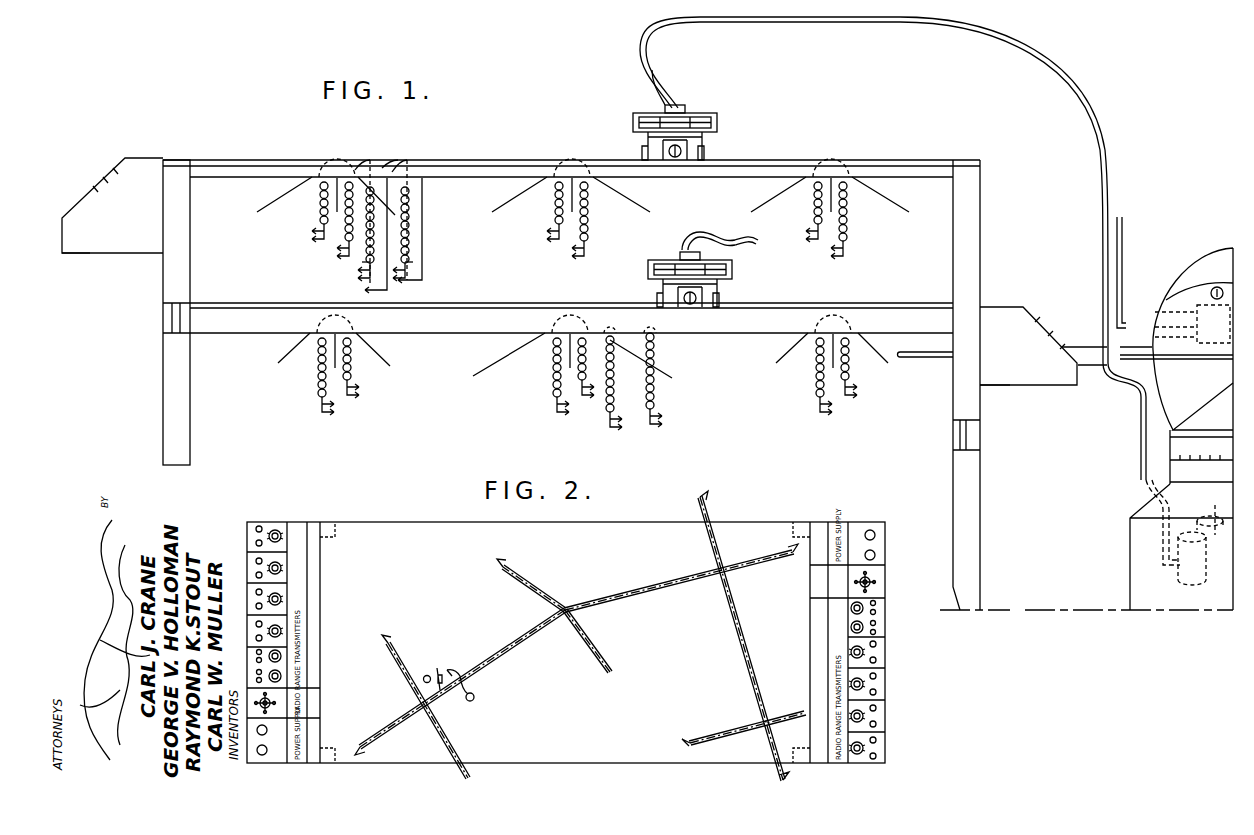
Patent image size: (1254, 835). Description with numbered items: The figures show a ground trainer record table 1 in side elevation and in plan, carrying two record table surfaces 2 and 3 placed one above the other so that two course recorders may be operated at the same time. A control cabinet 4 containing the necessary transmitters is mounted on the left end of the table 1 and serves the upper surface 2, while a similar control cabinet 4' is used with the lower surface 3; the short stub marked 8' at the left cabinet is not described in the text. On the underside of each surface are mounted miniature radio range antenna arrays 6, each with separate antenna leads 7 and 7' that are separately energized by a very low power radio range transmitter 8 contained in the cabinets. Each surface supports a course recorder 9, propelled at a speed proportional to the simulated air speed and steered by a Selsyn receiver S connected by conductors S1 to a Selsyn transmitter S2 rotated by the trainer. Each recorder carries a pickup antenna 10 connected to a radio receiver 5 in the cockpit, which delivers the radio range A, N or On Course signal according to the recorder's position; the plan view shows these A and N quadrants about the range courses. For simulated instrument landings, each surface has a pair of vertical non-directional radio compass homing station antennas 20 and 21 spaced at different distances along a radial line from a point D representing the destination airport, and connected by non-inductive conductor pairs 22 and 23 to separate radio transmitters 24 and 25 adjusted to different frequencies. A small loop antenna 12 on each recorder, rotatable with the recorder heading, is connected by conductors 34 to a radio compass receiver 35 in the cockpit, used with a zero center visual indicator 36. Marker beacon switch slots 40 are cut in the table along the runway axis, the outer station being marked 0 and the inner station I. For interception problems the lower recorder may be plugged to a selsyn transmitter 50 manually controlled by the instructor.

In FIG. 1, the record table 1 is at (982, 256).
In FIG. 1, the upper record table surface 2 is at (780, 161).
In FIG. 1, the lower record table surface 3 is at (805, 305).
In FIG. 1, the control cabinet 4 is at (112, 219).
In FIG. 1, the control cabinet 4' is at (1043, 361).
In FIG. 1, the radio receiver 5 is at (1162, 318).
In FIG. 1, the miniature radio range antenna array 6 is at (290, 200).
In FIG. 1, the antenna lead 7 is at (584, 287).
In FIG. 1, the antenna lead 7' is at (418, 209).
In FIG. 1, the radio range transmitter 8 is at (1000, 410).
In FIG. 2, the radio range transmitter 8 is at (582, 622).
In FIG. 1, the transmitter 8' is at (75, 264).
In FIG. 1, the course recorder 9 is at (718, 122).
In FIG. 1, the pickup antenna 10 is at (650, 149).
In FIG. 1, the loop antenna 12 is at (697, 148).
In FIG. 1, the radio compass homing station antenna 20 is at (412, 195).
In FIG. 1, the radio compass homing station antenna 21 is at (418, 183).
In FIG. 1, the non-inductive pair of conductors 22 is at (362, 264).
In FIG. 1, the non-inductive pair of conductors 23 is at (412, 262).
In FIG. 2, the radio transmitter 24 is at (283, 676).
In FIG. 2, the radio transmitter 25 is at (283, 657).
In FIG. 1, the conductors 34 is at (674, 100).
In FIG. 1, the radio compass receiver 35 is at (1160, 343).
In FIG. 1, the visual radio compass indicator 36 is at (1172, 289).
In FIG. 1, the marker beacon switch slot 40 is at (406, 160).
In FIG. 2, the marker beacon switch slot 40 is at (444, 672).
In FIG. 2, the selsyn transmitter 50 is at (279, 736).
In FIG. 1, the Selsyn receiver S is at (1196, 585).
In FIG. 1, the conductors S1 is at (1142, 473).
In FIG. 1, the Selsyn transmitter S2 is at (705, 141).
In FIG. 1, the inner marker beacon switch and radio compass homing station I is at (371, 162).
In FIG. 2, the inner marker beacon switch and radio compass homing station I is at (442, 696).
In FIG. 1, the outer marker beacon switch and radio compass homing station 0 is at (413, 163).
In FIG. 2, the airport point D is at (427, 675).
In FIG. 2, the radio range A signal A is at (580, 636).
In FIG. 2, the radio range N signal N is at (606, 645).